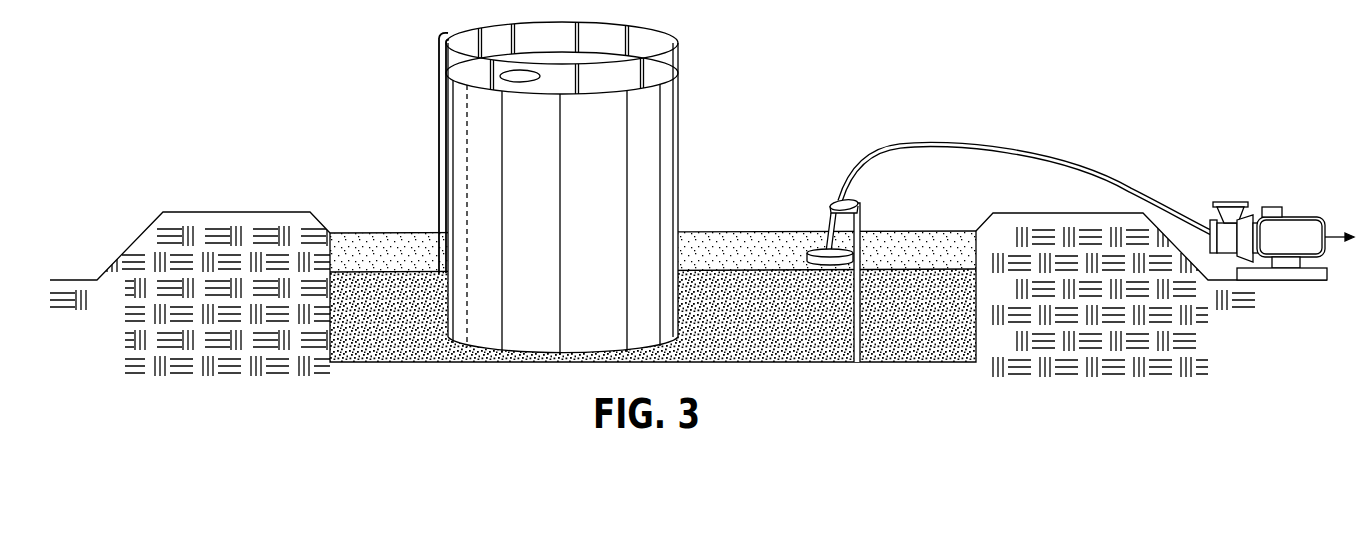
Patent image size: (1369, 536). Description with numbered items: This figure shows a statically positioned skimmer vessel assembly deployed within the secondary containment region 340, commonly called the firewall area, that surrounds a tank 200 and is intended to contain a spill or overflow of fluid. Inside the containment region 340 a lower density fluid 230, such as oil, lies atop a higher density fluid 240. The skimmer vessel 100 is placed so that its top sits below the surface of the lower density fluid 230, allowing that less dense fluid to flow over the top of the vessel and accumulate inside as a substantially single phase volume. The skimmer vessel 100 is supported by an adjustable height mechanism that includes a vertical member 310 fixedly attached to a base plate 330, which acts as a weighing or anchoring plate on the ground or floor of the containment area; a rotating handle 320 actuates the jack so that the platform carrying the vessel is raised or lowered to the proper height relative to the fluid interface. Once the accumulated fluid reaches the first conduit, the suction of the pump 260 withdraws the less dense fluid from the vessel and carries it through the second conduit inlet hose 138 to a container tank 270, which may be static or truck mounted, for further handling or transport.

The skimmer vessel 100 is at (823, 250).
The second conduit inlet hose 138 is at (1047, 158).
The tank 200 is at (667, 120).
The lower density fluid 230 is at (417, 270).
The higher density fluid 240 is at (417, 347).
The pump 260 is at (1273, 208).
The container tank 270 is at (1327, 235).
The vertical member 310 is at (863, 317).
The handle 320 is at (847, 192).
The base plate 330 is at (790, 357).
The secondary containment region 340 is at (192, 212).